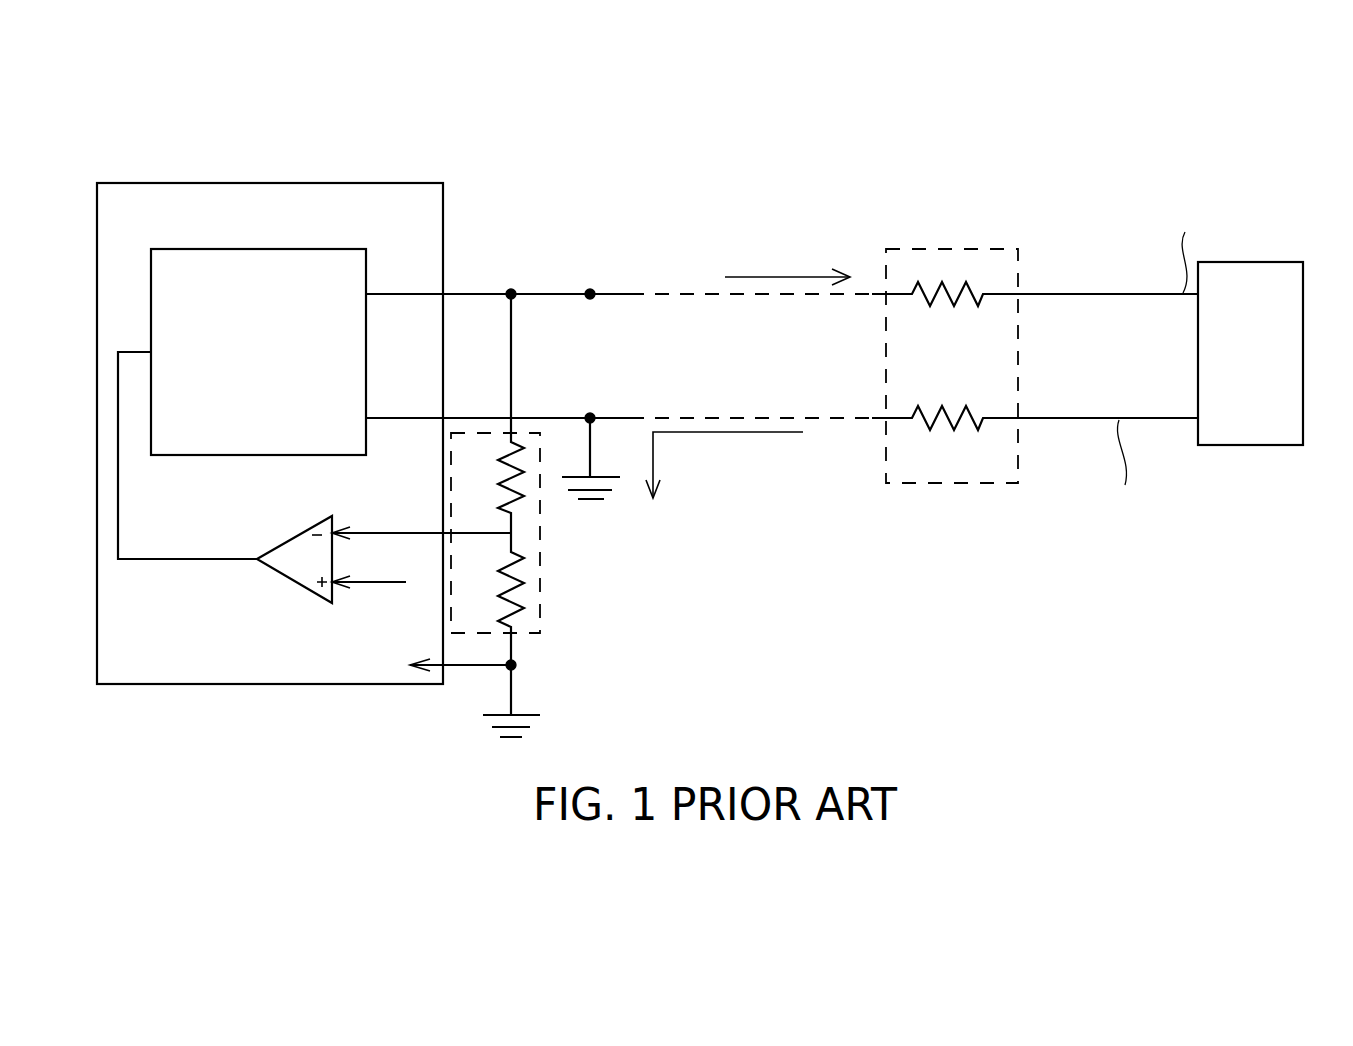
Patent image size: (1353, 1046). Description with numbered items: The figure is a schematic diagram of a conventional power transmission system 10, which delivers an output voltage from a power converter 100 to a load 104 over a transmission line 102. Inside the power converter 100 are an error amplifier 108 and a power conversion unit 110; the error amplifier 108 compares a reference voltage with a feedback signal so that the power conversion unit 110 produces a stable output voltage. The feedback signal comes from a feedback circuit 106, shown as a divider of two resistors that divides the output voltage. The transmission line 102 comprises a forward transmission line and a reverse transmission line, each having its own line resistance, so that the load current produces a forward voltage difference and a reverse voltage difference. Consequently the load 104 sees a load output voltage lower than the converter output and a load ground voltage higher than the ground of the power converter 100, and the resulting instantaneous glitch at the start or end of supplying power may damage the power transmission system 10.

The power transmission system 10 is at (1105, 82).
The power converter 100 is at (415, 183).
The transmission line 102 is at (950, 249).
The load 104 is at (1252, 262).
The feedback circuit 106 is at (540, 562).
The error amplifier 108 is at (287, 537).
The power conversion unit 110 is at (176, 248).